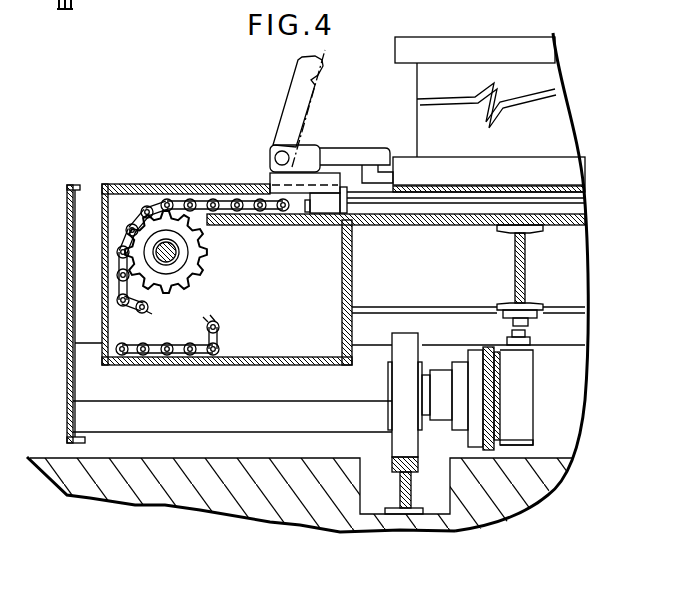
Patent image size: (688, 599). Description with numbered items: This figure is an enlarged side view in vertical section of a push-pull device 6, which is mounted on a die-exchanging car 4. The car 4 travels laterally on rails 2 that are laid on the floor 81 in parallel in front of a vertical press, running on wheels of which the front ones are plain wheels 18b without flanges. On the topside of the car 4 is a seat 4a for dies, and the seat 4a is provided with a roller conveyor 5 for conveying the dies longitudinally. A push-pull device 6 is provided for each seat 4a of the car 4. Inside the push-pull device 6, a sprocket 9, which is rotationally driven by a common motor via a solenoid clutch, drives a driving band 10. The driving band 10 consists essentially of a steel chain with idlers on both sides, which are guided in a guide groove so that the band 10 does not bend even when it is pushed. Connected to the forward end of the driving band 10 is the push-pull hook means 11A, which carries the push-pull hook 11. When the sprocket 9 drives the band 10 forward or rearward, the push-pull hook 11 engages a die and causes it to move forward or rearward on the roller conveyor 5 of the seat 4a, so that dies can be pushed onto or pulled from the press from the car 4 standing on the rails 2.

The rail 2 is at (403, 490).
The car 4 is at (588, 328).
The seat 4a is at (563, 175).
The roller conveyor 5 is at (470, 32).
The push-pull device 6 is at (199, 176).
The sprocket 9 is at (208, 240).
The driving band 10 is at (218, 186).
The push-pull hook 11 is at (335, 157).
The push-pull hook means 11A is at (281, 107).
The plain wheel 18b is at (404, 345).
The floor 81 is at (272, 457).